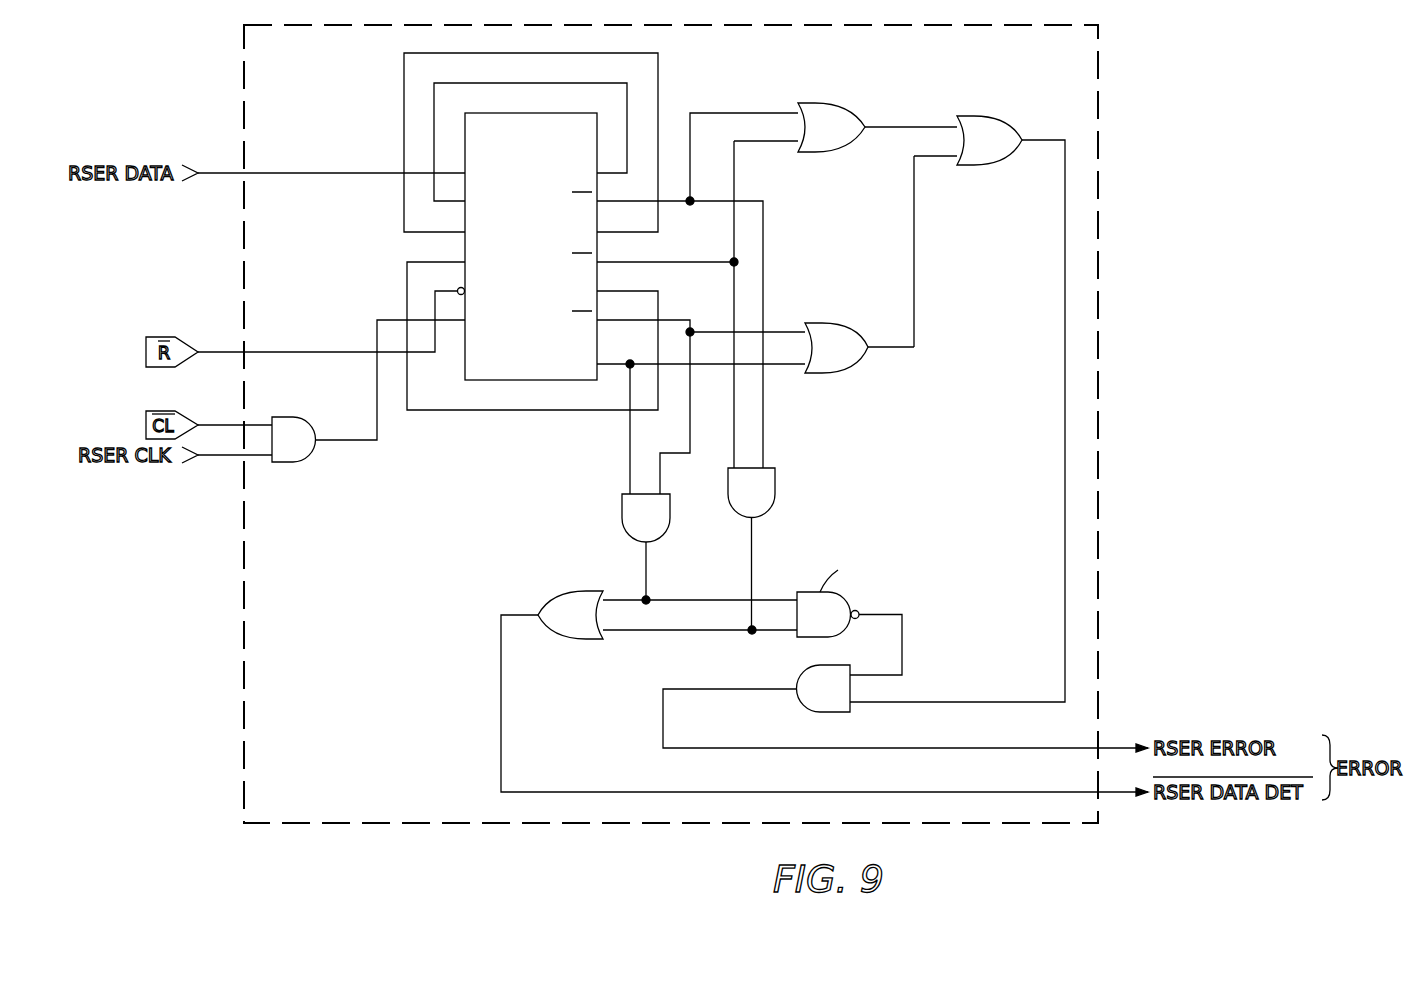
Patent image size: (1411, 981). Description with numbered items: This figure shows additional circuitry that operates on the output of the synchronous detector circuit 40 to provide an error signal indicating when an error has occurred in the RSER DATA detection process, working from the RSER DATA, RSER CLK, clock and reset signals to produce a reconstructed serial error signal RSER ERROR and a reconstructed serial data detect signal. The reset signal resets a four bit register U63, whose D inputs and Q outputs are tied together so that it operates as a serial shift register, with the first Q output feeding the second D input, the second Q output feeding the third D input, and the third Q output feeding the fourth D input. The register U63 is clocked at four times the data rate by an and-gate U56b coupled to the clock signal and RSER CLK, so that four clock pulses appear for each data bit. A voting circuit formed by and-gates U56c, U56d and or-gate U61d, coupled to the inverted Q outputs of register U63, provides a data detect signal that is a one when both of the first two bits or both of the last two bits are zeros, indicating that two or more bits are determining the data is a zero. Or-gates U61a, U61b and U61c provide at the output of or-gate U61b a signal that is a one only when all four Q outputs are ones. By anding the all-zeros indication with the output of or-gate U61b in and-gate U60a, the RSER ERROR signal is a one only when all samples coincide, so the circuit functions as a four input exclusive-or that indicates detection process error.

The synchronous detector circuit 40 is at (1123, 288).
The four bit register U63 is at (504, 357).
The or-gate U61a is at (818, 103).
The or-gate U61b is at (976, 116).
The or-gate U61c is at (823, 323).
The or-gate U61d is at (556, 591).
The and-gate U56b is at (287, 462).
The and-gate U56c is at (622, 517).
The and-gate U56d is at (775, 488).
The and-gate U60a is at (800, 707).